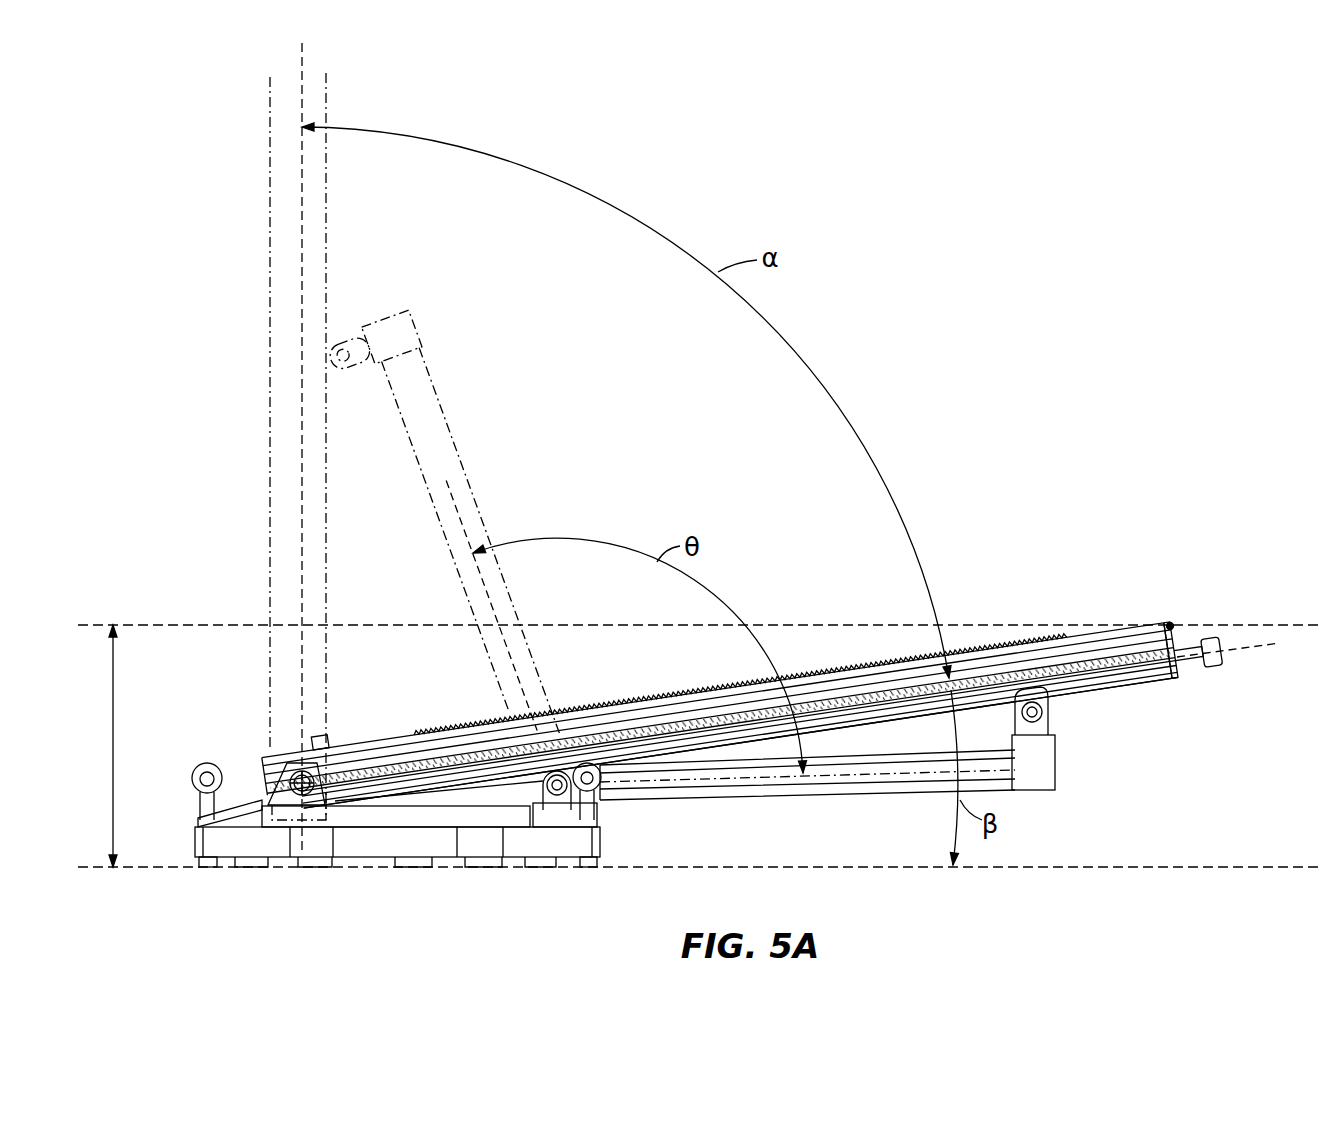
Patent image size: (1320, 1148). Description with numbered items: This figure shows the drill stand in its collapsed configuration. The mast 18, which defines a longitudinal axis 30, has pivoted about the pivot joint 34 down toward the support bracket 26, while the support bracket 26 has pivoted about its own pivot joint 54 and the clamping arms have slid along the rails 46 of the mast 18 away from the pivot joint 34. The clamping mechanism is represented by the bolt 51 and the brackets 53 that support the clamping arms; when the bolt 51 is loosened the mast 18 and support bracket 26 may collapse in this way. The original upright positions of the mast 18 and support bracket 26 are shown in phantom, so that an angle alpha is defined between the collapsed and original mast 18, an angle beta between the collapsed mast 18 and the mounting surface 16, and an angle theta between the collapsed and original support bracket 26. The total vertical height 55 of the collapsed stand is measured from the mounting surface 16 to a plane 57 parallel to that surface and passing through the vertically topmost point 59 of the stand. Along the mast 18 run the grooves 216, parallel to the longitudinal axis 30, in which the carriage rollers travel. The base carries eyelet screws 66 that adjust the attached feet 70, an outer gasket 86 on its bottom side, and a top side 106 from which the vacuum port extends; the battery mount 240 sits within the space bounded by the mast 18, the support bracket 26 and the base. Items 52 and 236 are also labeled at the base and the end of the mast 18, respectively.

The mounting surface 16 is at (1085, 868).
The mast 18 is at (268, 367).
The support bracket 26 is at (443, 414).
The longitudinal axis 30 is at (300, 259).
The pivot joint 34 is at (318, 800).
The rails 46 is at (908, 704).
The bolt 51 is at (1045, 712).
The base 52 is at (478, 840).
The brackets 53 is at (1035, 785).
The pivot joint 54 is at (563, 812).
The total vertical height 55 is at (113, 745).
The plane 57 is at (1293, 622).
The vertically topmost point 59 is at (1171, 624).
The eyelet screws 66 is at (192, 776).
The feet 70 is at (207, 866).
The outer gasket 86 is at (275, 864).
The top side 106 is at (248, 810).
The grooves 216 is at (1080, 650).
The end cap 236 is at (1185, 675).
The battery mount 240 is at (438, 810).